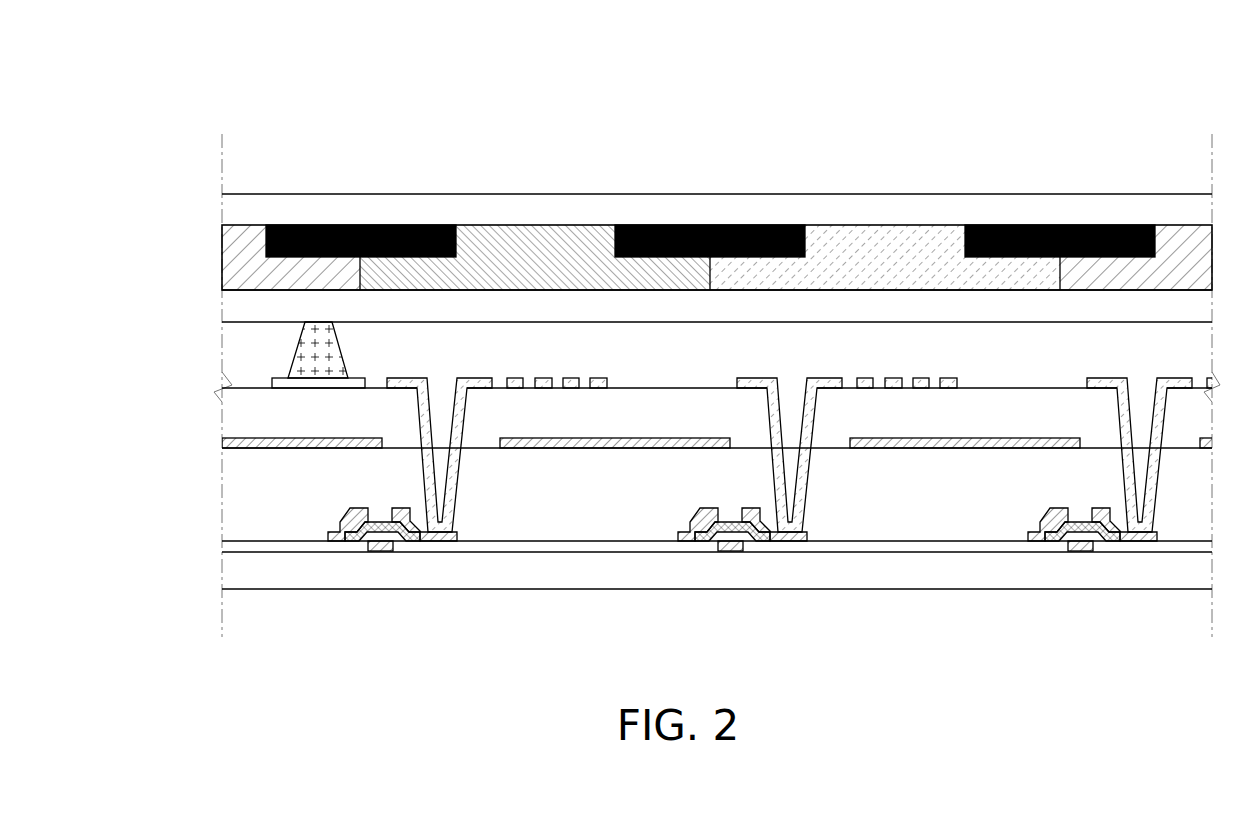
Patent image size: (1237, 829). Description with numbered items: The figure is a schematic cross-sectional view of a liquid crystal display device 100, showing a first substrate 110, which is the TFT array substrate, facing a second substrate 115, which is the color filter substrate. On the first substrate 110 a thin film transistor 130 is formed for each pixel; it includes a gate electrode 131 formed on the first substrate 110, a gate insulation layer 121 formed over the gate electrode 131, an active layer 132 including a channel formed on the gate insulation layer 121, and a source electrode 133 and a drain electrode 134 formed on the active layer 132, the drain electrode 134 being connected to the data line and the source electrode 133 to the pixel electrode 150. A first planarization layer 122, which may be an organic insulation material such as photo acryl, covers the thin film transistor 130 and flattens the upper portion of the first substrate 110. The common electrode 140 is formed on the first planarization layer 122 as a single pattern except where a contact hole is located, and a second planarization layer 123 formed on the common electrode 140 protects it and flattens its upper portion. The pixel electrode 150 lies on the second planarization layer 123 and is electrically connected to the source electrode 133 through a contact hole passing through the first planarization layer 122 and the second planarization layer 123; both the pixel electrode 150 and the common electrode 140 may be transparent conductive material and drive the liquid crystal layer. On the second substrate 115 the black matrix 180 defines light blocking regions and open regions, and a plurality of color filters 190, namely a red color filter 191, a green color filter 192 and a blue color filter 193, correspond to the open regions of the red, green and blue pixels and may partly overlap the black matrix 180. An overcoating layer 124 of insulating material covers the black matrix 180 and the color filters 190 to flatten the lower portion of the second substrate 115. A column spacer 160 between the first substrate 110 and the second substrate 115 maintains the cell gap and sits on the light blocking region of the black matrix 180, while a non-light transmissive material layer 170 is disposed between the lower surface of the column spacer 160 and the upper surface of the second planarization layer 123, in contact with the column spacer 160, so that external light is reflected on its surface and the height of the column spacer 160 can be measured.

The liquid crystal display device 100 is at (1212, 107).
The first substrate 110 is at (248, 572).
The second substrate 115 is at (246, 207).
The gate insulation layer 121 is at (246, 546).
The first planarization layer 122 is at (246, 497).
The second planarization layer 123 is at (248, 418).
The overcoating layer 124 is at (250, 307).
The thin film transistor 130 is at (396, 587).
The gate electrode 131 is at (382, 551).
The active layer 132 is at (362, 540).
The source electrode 133 is at (435, 568).
The drain electrode 134 is at (333, 541).
The common electrode 140 is at (512, 446).
The pixel electrode 150 is at (597, 390).
The column spacer 160 is at (318, 333).
The non-light transmissive material layer 170 is at (297, 382).
The black matrix 180 is at (268, 238).
The color filters 190 is at (607, 103).
The red color filter 191 is at (533, 262).
The green color filter 192 is at (820, 272).
The blue color filter 193 is at (347, 277).